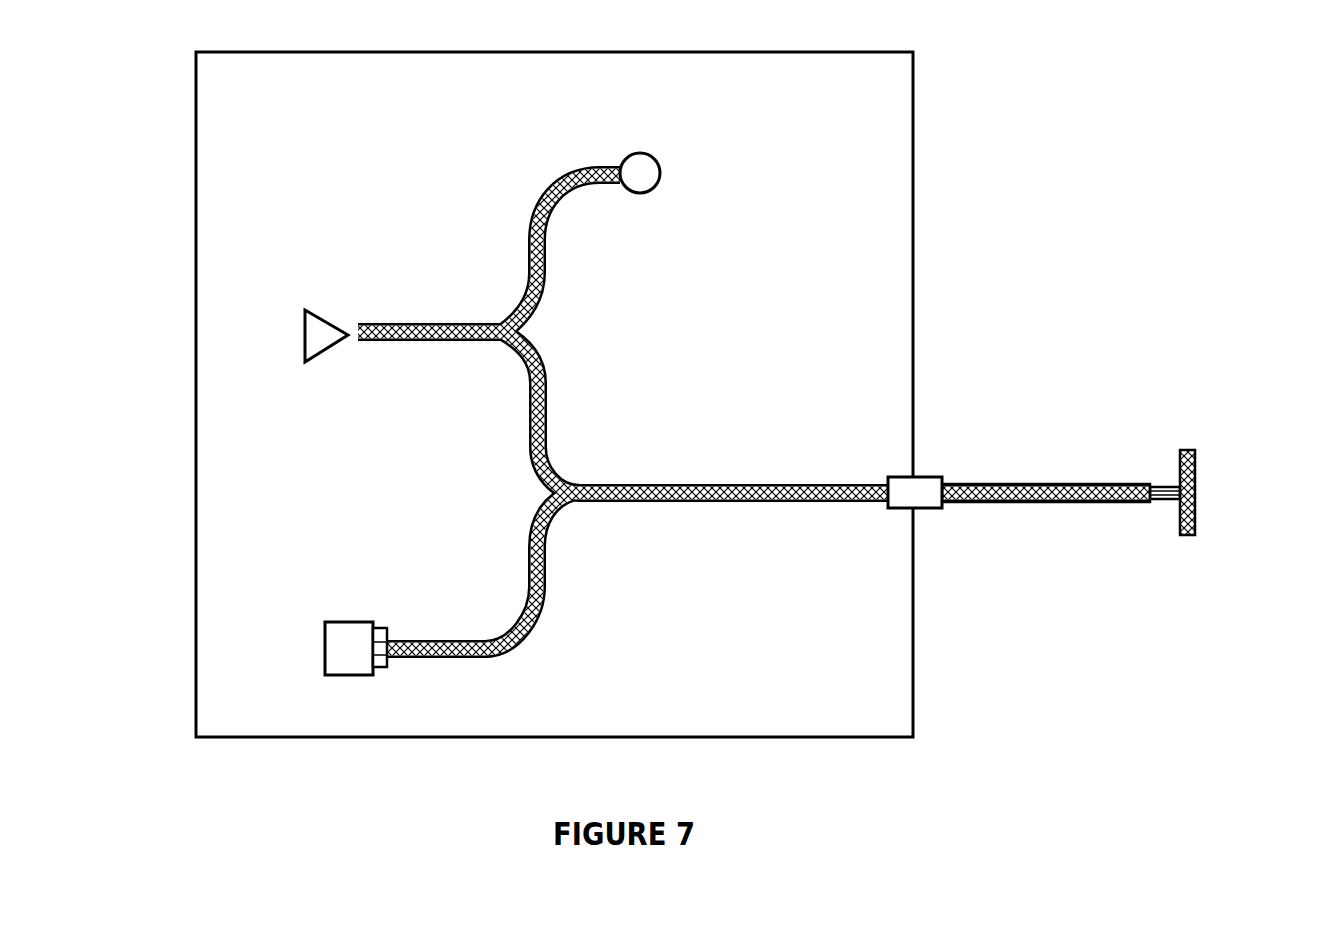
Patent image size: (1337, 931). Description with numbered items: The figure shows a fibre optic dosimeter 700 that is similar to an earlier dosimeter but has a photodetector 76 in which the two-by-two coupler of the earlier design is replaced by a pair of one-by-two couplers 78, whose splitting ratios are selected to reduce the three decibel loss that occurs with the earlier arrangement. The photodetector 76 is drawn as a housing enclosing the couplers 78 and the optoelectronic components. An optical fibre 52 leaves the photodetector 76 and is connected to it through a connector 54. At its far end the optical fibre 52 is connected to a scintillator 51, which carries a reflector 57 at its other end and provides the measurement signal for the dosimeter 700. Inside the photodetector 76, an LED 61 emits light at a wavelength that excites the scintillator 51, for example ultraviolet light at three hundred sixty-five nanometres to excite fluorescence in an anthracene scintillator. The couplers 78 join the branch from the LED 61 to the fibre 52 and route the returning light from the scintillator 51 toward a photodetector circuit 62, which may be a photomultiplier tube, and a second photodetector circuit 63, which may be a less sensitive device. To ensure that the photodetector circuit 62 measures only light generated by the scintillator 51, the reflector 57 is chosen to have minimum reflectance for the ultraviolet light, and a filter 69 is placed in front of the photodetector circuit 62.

The dosimeter 700 is at (943, 253).
The photodetector 76 is at (915, 663).
The 1x2 couplers 78 is at (533, 338).
The optical fibre 52 is at (1045, 485).
The connector 54 is at (930, 483).
The scintillator 51 is at (1162, 505).
The reflector 57 is at (1195, 455).
The LED 61 is at (306, 337).
The second photodetector circuit 63 is at (650, 177).
The photodetector circuit 62 is at (340, 652).
The filter 69 is at (390, 660).